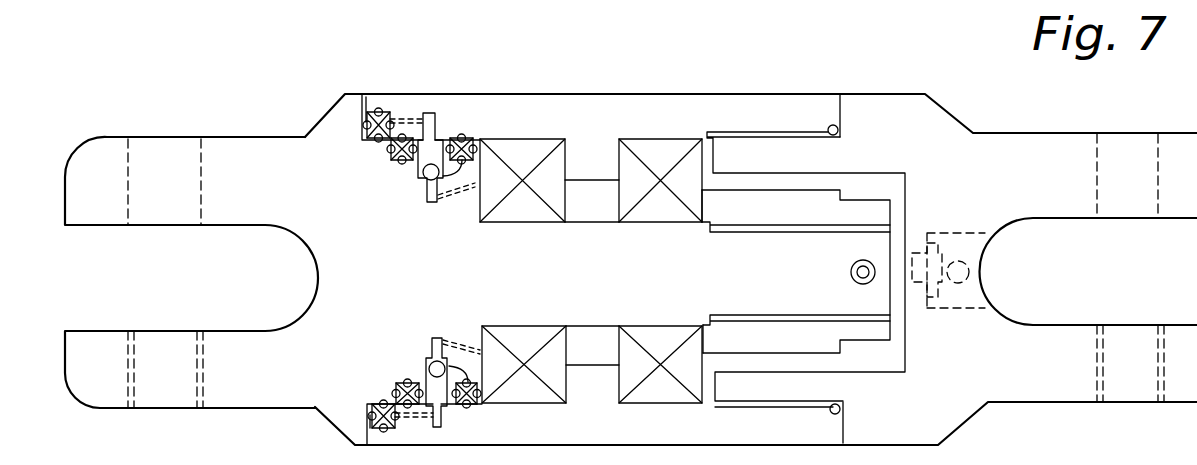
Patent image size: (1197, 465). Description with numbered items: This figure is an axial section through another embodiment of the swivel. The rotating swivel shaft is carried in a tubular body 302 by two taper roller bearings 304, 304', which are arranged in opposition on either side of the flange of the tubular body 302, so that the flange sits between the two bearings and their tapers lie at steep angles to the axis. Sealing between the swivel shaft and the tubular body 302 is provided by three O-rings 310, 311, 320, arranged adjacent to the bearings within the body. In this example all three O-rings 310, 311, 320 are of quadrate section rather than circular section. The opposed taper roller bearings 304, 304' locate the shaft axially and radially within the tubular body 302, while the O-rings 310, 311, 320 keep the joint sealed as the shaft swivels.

The tubular body 302 is at (598, 388).
The taper roller bearing 304 is at (534, 226).
The taper roller bearing 304' is at (676, 226).
The O-ring 310 is at (425, 195).
The O-ring 311 is at (398, 163).
The O-ring 320 is at (376, 118).